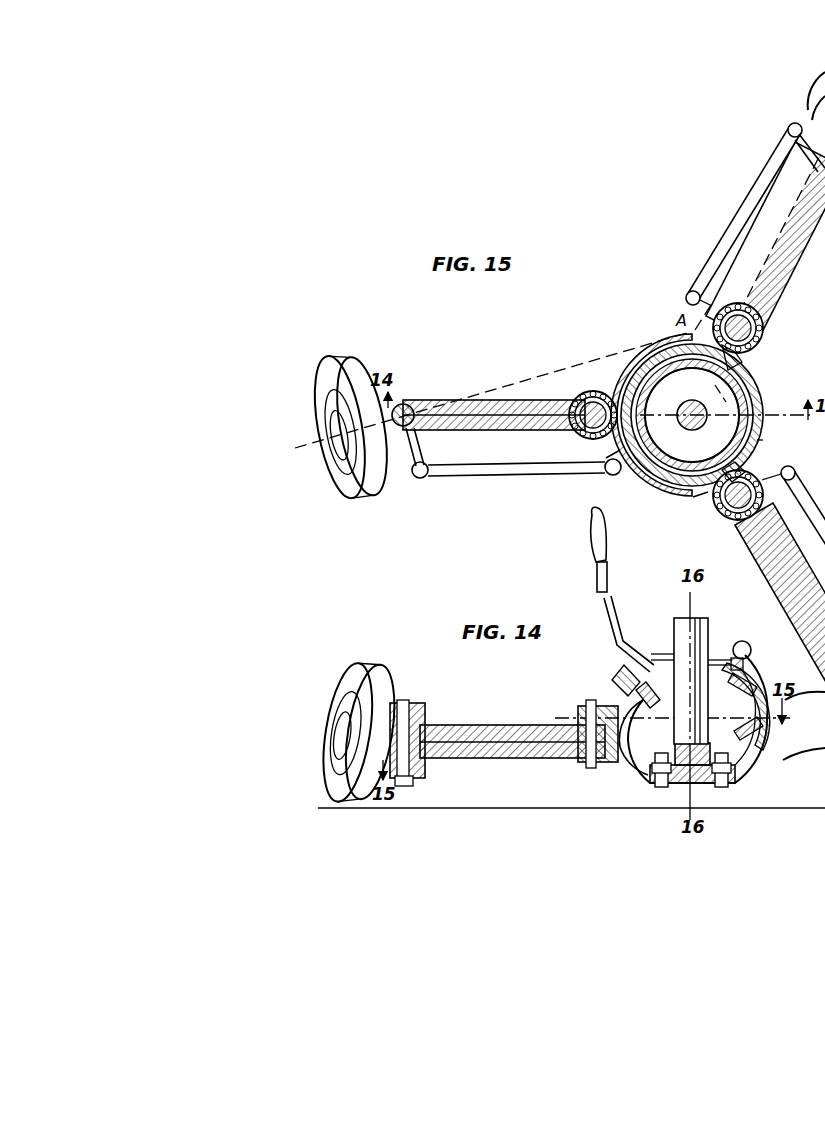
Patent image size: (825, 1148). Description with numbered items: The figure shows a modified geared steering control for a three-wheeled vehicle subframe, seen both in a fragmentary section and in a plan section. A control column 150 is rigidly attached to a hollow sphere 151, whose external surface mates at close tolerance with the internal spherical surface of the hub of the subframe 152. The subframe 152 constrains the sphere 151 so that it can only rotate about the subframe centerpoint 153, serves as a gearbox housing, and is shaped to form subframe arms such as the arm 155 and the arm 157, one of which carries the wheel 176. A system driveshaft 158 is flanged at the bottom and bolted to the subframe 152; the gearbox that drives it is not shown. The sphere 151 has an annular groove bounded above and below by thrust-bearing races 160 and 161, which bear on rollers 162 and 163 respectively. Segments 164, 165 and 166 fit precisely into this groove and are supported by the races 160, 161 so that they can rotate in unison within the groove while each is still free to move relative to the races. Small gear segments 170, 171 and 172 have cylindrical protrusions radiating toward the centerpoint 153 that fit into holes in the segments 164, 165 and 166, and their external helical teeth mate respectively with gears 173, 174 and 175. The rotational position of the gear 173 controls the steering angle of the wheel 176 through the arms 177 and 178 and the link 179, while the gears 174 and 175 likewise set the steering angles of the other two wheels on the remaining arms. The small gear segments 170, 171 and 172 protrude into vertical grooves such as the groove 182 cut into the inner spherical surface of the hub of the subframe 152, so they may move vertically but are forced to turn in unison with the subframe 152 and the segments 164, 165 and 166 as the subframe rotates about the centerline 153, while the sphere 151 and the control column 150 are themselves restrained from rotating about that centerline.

In FIG. 14, the control column 150 is at (612, 641).
In FIG. 15, the hollow sphere 151 is at (670, 428).
In FIG. 14, the hollow sphere 151 is at (638, 715).
In FIG. 14, the subframe 152 is at (735, 770).
In FIG. 15, the subframe centerpoint 153 is at (699, 388).
In FIG. 14, the subframe centerpoint 153 is at (695, 712).
In FIG. 15, the subframe arm 155 is at (457, 400).
In FIG. 14, the subframe arm 155 is at (455, 725).
In FIG. 15, the subframe arm 157 is at (775, 575).
In FIG. 15, the system driveshaft 158 is at (700, 468).
In FIG. 14, the system driveshaft 158 is at (668, 648).
In FIG. 14, the thrust-bearing race 160 is at (748, 690).
In FIG. 14, the thrust-bearing race 161 is at (750, 726).
In FIG. 14, the roller 162 is at (752, 662).
In FIG. 14, the roller 163 is at (744, 745).
In FIG. 15, the segment 164 is at (638, 375).
In FIG. 15, the segment 165 is at (760, 380).
In FIG. 15, the segment 166 is at (757, 430).
In FIG. 15, the small gear segment 170 is at (630, 393).
In FIG. 15, the small gear segment 171 is at (760, 350).
In FIG. 15, the small gear segment 172 is at (713, 500).
In FIG. 15, the gear 173 is at (578, 400).
In FIG. 14, the gear 173 is at (578, 716).
In FIG. 15, the gear 174 is at (762, 326).
In FIG. 15, the gear 175 is at (730, 520).
In FIG. 15, the wheel 176 is at (330, 395).
In FIG. 15, the arm 177 is at (605, 455).
In FIG. 15, the arm 178 is at (416, 444).
In FIG. 15, the link 179 is at (476, 466).
In FIG. 14, the vertical groove 182 is at (618, 700).